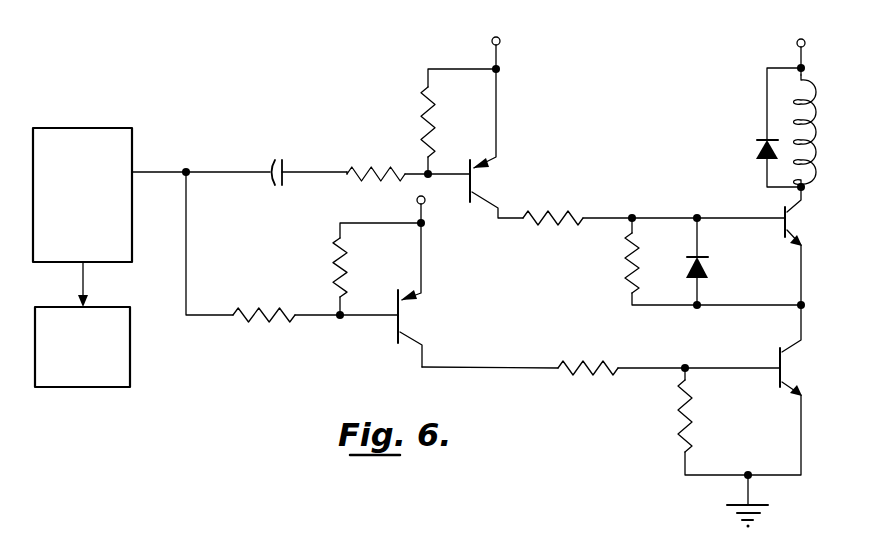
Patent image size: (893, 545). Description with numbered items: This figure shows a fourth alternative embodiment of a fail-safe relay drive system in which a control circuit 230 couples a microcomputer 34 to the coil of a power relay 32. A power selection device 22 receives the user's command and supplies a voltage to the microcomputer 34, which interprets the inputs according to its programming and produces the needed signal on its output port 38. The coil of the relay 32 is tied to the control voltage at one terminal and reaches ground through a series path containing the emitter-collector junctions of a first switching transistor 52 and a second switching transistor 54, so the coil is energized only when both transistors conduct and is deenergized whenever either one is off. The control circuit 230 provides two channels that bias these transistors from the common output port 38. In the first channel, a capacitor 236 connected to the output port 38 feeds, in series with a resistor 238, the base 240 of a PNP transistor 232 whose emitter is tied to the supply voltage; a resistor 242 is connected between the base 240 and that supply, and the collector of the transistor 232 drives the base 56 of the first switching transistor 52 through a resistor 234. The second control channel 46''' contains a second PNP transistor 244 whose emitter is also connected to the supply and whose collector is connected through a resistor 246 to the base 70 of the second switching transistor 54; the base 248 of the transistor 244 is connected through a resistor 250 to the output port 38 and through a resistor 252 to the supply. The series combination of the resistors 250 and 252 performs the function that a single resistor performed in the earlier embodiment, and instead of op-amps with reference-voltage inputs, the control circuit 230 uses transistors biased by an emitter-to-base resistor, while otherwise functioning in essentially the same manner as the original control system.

The microcomputer 34 is at (133, 242).
The power selection device 22 is at (130, 370).
The output port 38 is at (135, 170).
The control circuit 230 is at (287, 140).
The capacitor 236 is at (268, 178).
The resistor 238 is at (381, 170).
The resistor 242 is at (434, 113).
The base 240 is at (443, 177).
The PNP transistor 232 is at (480, 192).
The resistor 234 is at (555, 213).
The base 56 is at (732, 218).
The power relay coil 32 is at (808, 120).
The first switching transistor 52 is at (795, 212).
The second switching transistor 54 is at (790, 357).
The base 70 is at (727, 367).
The resistor 246 is at (632, 338).
The second PNP transistor 244 is at (410, 335).
The base 248 is at (305, 318).
The resistor 250 is at (263, 312).
The resistor 252 is at (345, 245).
The second control channel 46''' is at (517, 328).